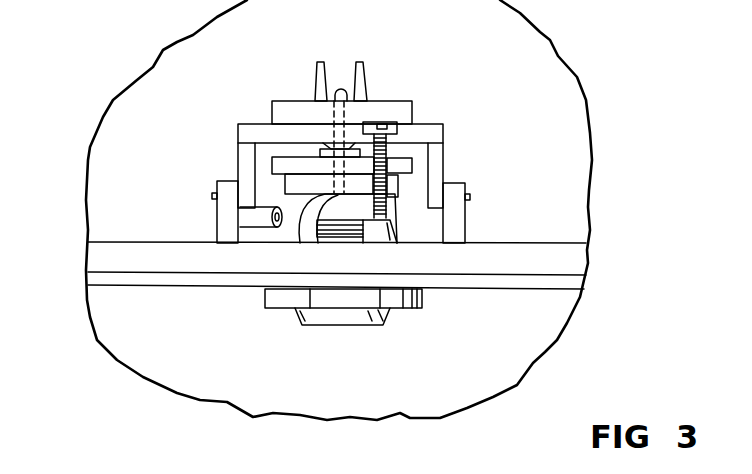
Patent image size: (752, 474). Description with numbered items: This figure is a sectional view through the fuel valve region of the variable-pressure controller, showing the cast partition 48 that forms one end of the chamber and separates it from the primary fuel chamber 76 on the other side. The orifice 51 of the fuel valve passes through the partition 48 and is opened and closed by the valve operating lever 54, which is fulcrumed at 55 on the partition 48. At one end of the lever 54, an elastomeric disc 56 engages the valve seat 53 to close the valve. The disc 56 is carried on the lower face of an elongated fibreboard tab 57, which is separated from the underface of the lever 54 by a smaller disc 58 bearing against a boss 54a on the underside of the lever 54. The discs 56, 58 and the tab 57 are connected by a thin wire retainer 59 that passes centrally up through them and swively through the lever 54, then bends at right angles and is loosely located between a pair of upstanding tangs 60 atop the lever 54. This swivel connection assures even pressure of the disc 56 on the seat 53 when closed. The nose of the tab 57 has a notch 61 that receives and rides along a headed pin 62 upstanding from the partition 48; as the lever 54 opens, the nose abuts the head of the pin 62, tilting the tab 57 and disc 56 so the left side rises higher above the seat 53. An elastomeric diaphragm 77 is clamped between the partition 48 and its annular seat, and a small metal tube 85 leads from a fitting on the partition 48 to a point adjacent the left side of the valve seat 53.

The partition 48 is at (98, 253).
The orifice 51 is at (345, 322).
The valve seat 53 is at (310, 236).
The valve operating lever 54 is at (444, 131).
The boss 54a is at (338, 141).
The fulcrum 55 is at (212, 196).
The elastomeric disc 56 is at (397, 197).
The fibreboard tab 57 is at (272, 162).
The smaller disc 58 is at (318, 153).
The wire retainer 59 is at (343, 90).
The upstanding tangs 60 is at (322, 61).
The notch 61 is at (400, 158).
The headed pin 62 is at (390, 126).
The primary fuel chamber 76 is at (536, 340).
The diaphragm 77 is at (560, 289).
The metal tube 85 is at (242, 213).